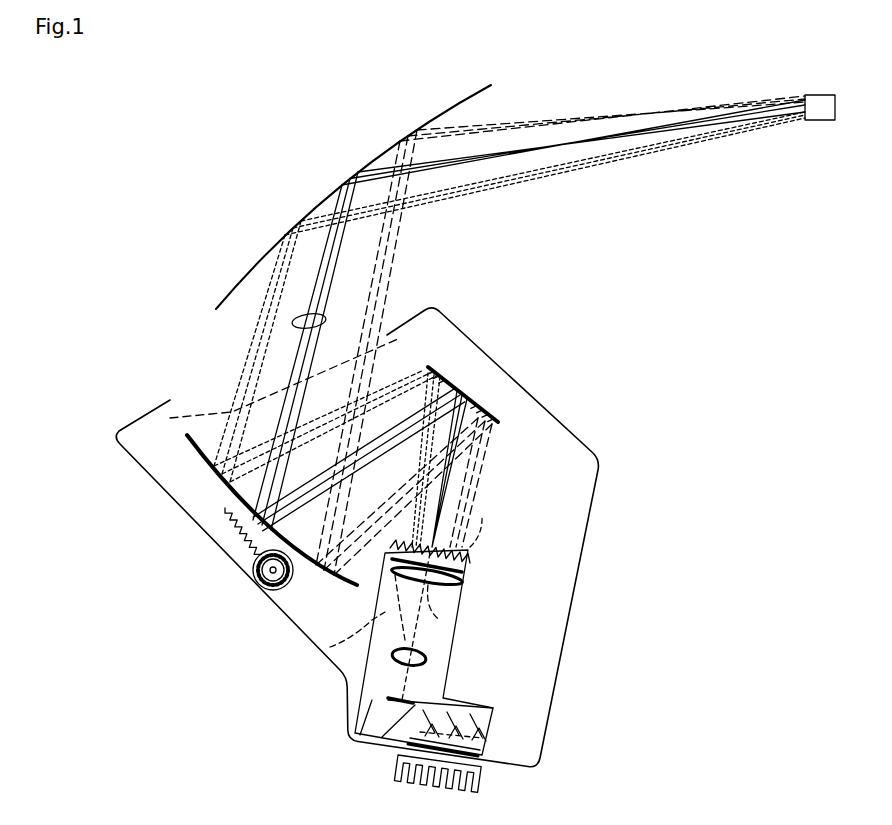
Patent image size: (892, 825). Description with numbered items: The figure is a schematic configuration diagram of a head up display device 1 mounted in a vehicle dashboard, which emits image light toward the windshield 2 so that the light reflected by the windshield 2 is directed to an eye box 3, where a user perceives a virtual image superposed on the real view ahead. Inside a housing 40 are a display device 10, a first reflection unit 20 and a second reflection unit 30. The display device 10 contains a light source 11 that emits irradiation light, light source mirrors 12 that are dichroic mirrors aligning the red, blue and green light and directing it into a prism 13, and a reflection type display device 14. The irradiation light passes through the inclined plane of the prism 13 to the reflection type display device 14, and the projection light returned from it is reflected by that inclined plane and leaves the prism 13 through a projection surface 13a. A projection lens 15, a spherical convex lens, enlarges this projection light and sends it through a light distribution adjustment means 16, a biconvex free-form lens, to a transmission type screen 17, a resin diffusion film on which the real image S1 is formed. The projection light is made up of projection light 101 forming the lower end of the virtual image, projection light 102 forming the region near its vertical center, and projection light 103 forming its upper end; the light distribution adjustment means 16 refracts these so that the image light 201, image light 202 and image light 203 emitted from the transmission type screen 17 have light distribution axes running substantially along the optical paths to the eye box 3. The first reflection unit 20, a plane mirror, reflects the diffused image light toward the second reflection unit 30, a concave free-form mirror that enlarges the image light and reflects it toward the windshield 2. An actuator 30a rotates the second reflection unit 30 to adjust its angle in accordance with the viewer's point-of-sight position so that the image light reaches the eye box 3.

The head up display device 1 is at (566, 311).
The windshield 2 is at (270, 251).
The eye box 3 is at (812, 94).
The display device 10 is at (470, 563).
The light source 11 is at (480, 752).
The light source mirror 12 is at (495, 716).
The prism 13 is at (385, 728).
The projection surface 13a is at (392, 694).
The reflection type display device 14 is at (384, 716).
The projection lens 15 is at (428, 658).
The light distribution adjustment means 16 is at (465, 588).
The transmission type screen 17 is at (465, 571).
The first reflection unit 20 is at (441, 378).
The second reflection unit 30 is at (236, 489).
The actuator 30a is at (256, 579).
The housing 40 is at (594, 440).
The projection light 101 is at (330, 647).
The projection light 102 is at (420, 600).
The projection light 103 is at (441, 620).
The image light 201 is at (262, 352).
The image light 202 is at (333, 304).
The image light 203 is at (395, 285).
The real image S1 is at (482, 520).